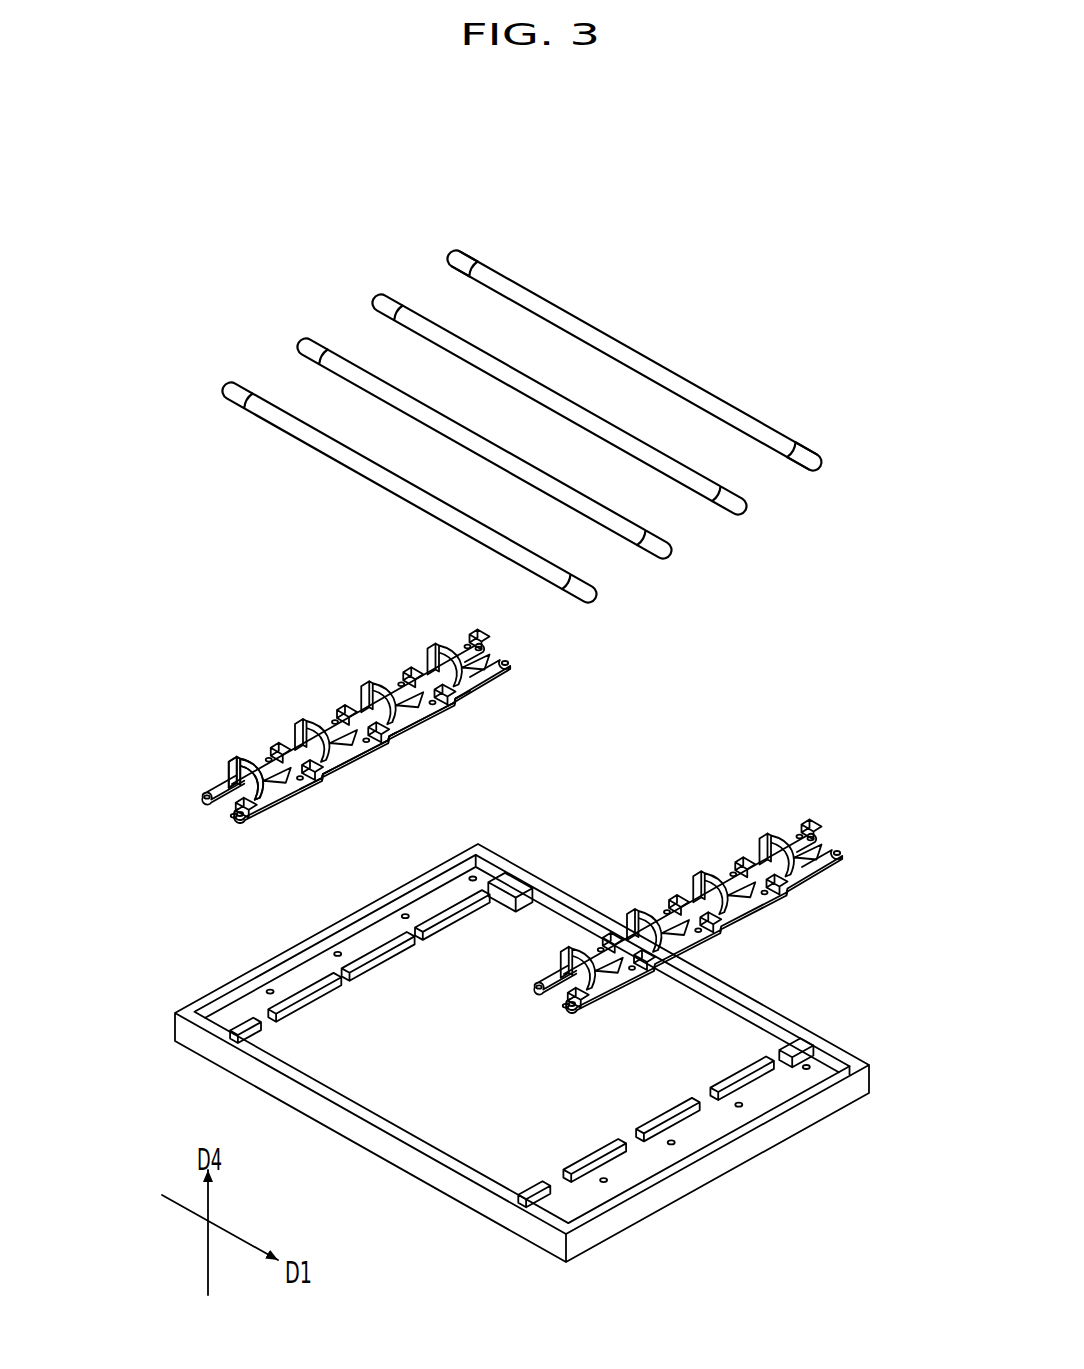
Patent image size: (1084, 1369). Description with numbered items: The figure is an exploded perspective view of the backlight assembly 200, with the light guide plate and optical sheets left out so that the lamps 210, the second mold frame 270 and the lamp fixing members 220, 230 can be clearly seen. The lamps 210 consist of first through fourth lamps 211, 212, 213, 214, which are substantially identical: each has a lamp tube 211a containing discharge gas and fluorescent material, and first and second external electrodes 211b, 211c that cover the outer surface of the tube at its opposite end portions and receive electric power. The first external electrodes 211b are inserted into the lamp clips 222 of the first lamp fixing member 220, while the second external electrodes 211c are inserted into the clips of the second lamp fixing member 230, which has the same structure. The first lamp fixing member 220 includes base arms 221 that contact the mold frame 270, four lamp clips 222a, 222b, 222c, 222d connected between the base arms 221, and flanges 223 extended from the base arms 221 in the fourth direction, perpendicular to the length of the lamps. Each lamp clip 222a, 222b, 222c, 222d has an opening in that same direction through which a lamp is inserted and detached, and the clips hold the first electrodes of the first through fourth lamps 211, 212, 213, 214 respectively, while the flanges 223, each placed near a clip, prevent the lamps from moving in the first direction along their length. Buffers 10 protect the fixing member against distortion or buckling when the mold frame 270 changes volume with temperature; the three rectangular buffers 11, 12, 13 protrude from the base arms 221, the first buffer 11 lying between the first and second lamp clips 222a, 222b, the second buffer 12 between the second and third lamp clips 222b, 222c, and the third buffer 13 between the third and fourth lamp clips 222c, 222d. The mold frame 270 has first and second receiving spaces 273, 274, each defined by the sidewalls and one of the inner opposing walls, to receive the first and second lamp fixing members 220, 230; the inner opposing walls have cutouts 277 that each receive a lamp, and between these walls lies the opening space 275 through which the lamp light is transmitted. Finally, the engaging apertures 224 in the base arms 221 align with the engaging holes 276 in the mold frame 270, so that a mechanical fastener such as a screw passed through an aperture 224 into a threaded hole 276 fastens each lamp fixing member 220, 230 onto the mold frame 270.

The backlight assembly 200 is at (666, 175).
The lamps 210 is at (827, 483).
The first lamp 211 is at (798, 332).
The lamp tube 211a is at (638, 365).
The first external electrode 211b is at (487, 283).
The second external electrode 211c is at (798, 450).
The second lamp 212 is at (438, 335).
The third lamp 213 is at (363, 377).
The fourth lamp 214 is at (290, 420).
The first lamp fixing member 220 is at (200, 815).
The base arms 221 is at (483, 675).
The lamp clips 222 is at (380, 590).
The first lamp clip 222a is at (447, 645).
The second lamp clip 222b is at (380, 680).
The third lamp clip 222c is at (312, 720).
The fourth lamp clip 222d is at (247, 755).
The flanges 223 is at (228, 764).
The engaging apertures 224 is at (205, 790).
The buffers 10 is at (508, 762).
The first buffer 11 is at (454, 703).
The second buffer 12 is at (388, 740).
The third buffer 13 is at (322, 778).
The second lamp fixing member 230 is at (842, 838).
The second mold frame 270 is at (493, 1085).
The first receiving space 273 is at (244, 1013).
The second receiving space 274 is at (642, 1170).
The opening space 275 is at (404, 1107).
The engaging holes 276 is at (268, 987).
The cutouts 277 is at (507, 910).